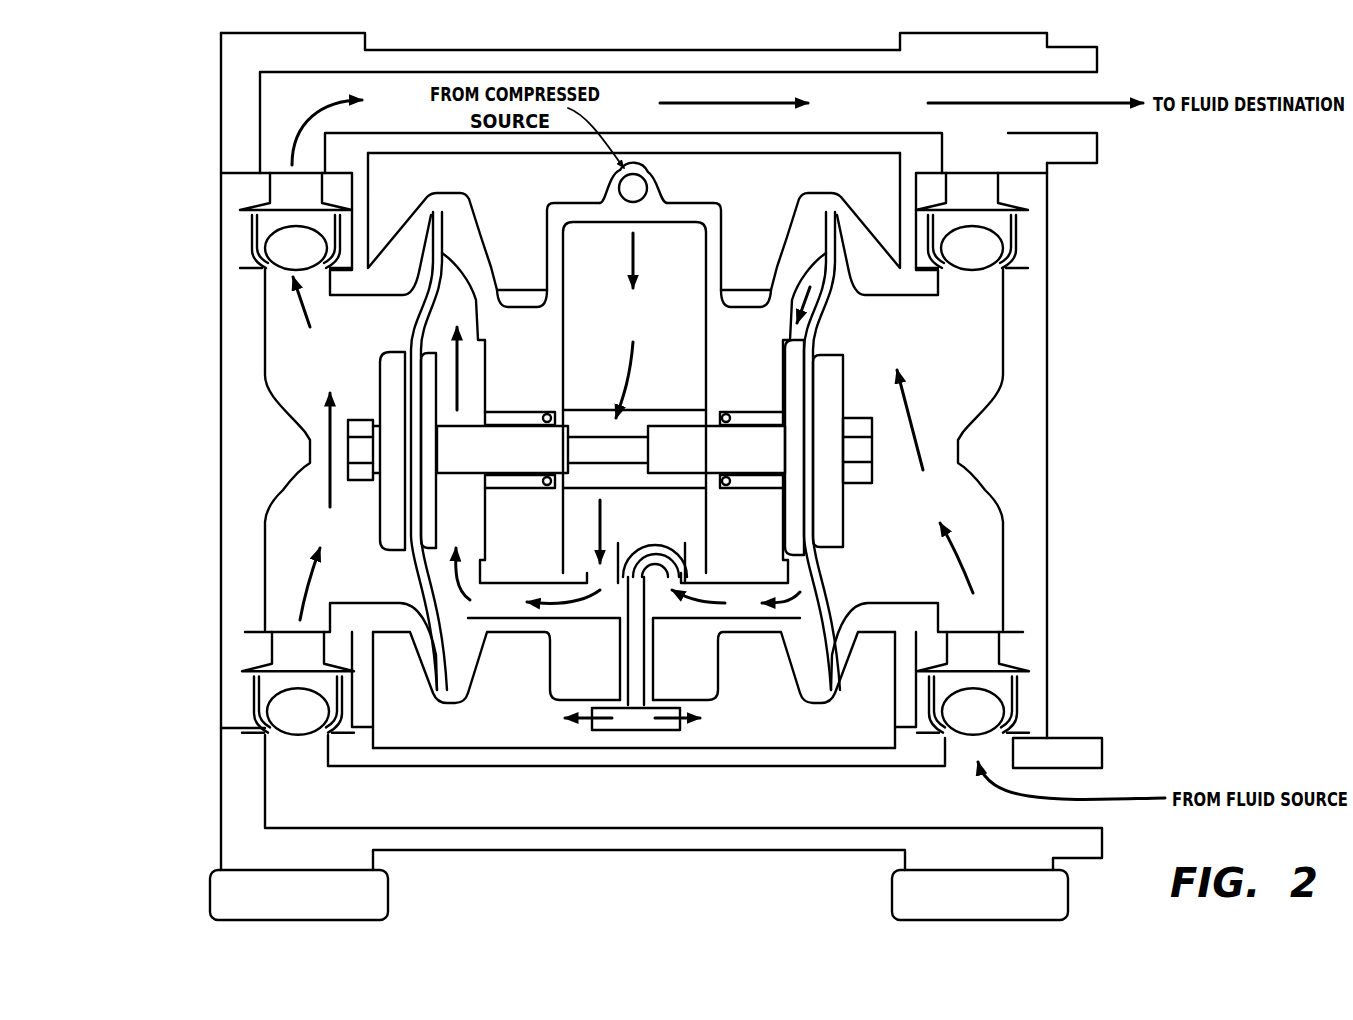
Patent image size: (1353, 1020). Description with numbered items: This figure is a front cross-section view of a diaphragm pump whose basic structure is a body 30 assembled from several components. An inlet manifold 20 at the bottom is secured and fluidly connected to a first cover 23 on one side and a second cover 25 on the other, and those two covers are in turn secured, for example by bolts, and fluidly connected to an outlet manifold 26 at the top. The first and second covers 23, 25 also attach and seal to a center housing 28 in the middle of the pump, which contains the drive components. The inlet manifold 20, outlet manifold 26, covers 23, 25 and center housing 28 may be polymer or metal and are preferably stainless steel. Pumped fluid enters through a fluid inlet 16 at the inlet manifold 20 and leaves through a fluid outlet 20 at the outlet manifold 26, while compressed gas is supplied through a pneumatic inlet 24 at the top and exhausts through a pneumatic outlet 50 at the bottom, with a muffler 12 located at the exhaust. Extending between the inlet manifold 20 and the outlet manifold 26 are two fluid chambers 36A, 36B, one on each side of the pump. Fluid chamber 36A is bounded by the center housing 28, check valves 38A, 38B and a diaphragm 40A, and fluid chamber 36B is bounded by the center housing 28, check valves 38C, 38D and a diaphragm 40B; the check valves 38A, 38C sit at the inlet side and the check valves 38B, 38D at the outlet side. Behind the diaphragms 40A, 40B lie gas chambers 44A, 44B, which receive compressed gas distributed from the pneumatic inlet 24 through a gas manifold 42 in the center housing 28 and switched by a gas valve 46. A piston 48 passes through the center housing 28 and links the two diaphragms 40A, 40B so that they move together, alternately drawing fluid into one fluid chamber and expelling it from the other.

The muffler 12 is at (670, 712).
The fluid inlet 16 is at (1102, 753).
The inlet manifold 20 is at (1100, 52).
The first cover 23 is at (1047, 441).
The pneumatic inlet 24 is at (648, 189).
The second cover 25 is at (221, 398).
The outlet manifold 26 is at (958, 33).
The center housing 28 is at (763, 640).
The body 30 is at (806, 47).
The fluid chamber 36A is at (927, 479).
The fluid chamber 36B is at (341, 479).
The check valve 38A is at (1035, 658).
The check valve 38B is at (1035, 215).
The check valve 38C is at (240, 683).
The check valve 38D is at (240, 208).
The diaphragm 40A is at (810, 315).
The diaphragm 40B is at (425, 326).
The gas manifold 42 is at (634, 397).
The gas chamber 44A is at (810, 583).
The gas chamber 44B is at (485, 386).
The gas valve 46 is at (653, 550).
The piston 48 is at (611, 449).
The pneumatic outlet 50 is at (640, 646).